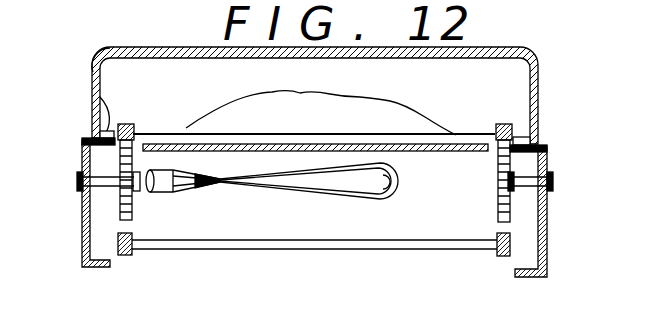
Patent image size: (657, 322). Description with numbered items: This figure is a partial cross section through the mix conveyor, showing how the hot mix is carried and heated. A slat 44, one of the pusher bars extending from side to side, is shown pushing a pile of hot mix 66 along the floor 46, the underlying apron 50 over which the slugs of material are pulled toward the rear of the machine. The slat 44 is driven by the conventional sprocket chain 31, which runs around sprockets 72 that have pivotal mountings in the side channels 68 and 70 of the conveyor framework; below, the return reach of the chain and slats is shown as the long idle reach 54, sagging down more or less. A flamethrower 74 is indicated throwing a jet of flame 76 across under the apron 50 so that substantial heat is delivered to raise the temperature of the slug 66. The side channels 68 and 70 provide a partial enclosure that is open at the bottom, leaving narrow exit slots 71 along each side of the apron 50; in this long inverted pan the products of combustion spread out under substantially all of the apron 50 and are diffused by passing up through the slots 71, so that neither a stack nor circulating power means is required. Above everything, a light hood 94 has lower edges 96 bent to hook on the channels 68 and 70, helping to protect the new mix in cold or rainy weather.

The pile of hot mix 66 is at (393, 118).
The light hood 94 is at (93, 64).
The lower edges 96 is at (100, 102).
The exit slots 71 is at (98, 131).
The slat 44 is at (457, 134).
The floor 46 is at (431, 153).
The side channel 70 is at (82, 228).
The side channel 68 is at (547, 257).
The sprockets 72 is at (514, 201).
The sprocket chain 31 is at (514, 172).
The idle reach 54 is at (461, 248).
The apron 50 is at (293, 148).
The flamethrower 74 is at (221, 183).
The jet of flame 76 is at (333, 188).